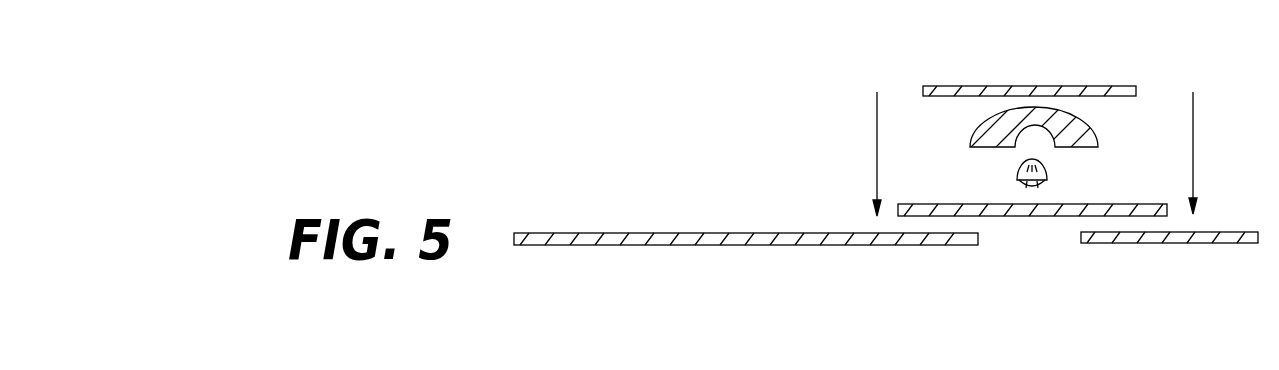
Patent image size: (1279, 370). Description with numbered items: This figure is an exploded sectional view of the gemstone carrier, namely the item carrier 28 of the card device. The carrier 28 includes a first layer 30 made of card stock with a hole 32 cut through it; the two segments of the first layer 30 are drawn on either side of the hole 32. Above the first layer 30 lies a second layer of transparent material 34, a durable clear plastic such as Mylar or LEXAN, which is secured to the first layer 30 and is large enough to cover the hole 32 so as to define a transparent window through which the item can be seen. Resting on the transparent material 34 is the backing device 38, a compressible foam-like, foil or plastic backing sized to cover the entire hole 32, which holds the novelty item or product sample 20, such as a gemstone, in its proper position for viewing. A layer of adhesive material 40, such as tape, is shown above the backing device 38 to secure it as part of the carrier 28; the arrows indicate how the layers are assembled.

The novelty item or product sample 20 is at (1048, 178).
The item carrier 28 is at (876, 264).
The first layer 30 is at (1163, 243).
The hole 32 is at (1050, 238).
The second layer of transparent material 34 is at (1128, 204).
The backing device 38 is at (986, 150).
The layer of adhesive material 40 is at (977, 86).